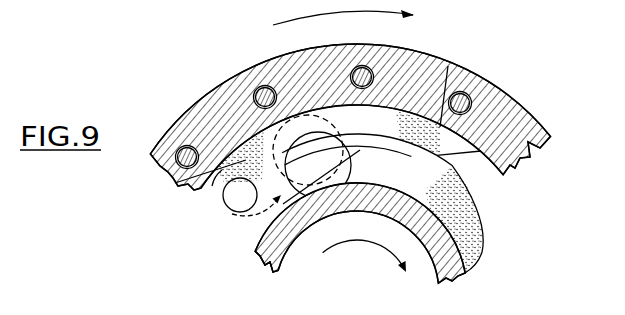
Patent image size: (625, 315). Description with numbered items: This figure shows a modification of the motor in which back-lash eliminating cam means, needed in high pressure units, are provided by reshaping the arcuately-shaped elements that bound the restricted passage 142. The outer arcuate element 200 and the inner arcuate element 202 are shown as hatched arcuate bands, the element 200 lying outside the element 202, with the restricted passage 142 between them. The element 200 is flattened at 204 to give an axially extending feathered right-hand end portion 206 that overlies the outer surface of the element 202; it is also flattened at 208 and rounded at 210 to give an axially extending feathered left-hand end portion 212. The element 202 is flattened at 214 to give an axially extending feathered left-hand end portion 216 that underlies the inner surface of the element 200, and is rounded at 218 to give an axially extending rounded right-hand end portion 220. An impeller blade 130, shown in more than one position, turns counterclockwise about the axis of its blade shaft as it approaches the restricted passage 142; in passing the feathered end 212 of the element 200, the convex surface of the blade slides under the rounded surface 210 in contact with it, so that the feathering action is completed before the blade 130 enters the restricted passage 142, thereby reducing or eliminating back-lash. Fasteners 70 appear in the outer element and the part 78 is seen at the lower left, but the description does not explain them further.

The bolt 70 is at (338, 55).
The rotor hub 78 is at (266, 263).
The impeller blade 130 is at (343, 154).
The restricted passage 142 is at (372, 139).
The modified arcuately-shaped element 200 is at (262, 133).
The modified arcuately-shaped element 202 is at (481, 230).
The flattened portion 204 is at (470, 156).
The feathered right-hand end portion 206 is at (448, 66).
The flattened portion 208 is at (241, 206).
The rounded surface 210 is at (215, 186).
The feathered left-hand end portion 212 is at (173, 183).
The flattened portion 214 is at (340, 164).
The feathered left-hand end portion 216 is at (333, 210).
The rounded portion 218 is at (472, 253).
The rounded right-hand end portion 220 is at (483, 240).